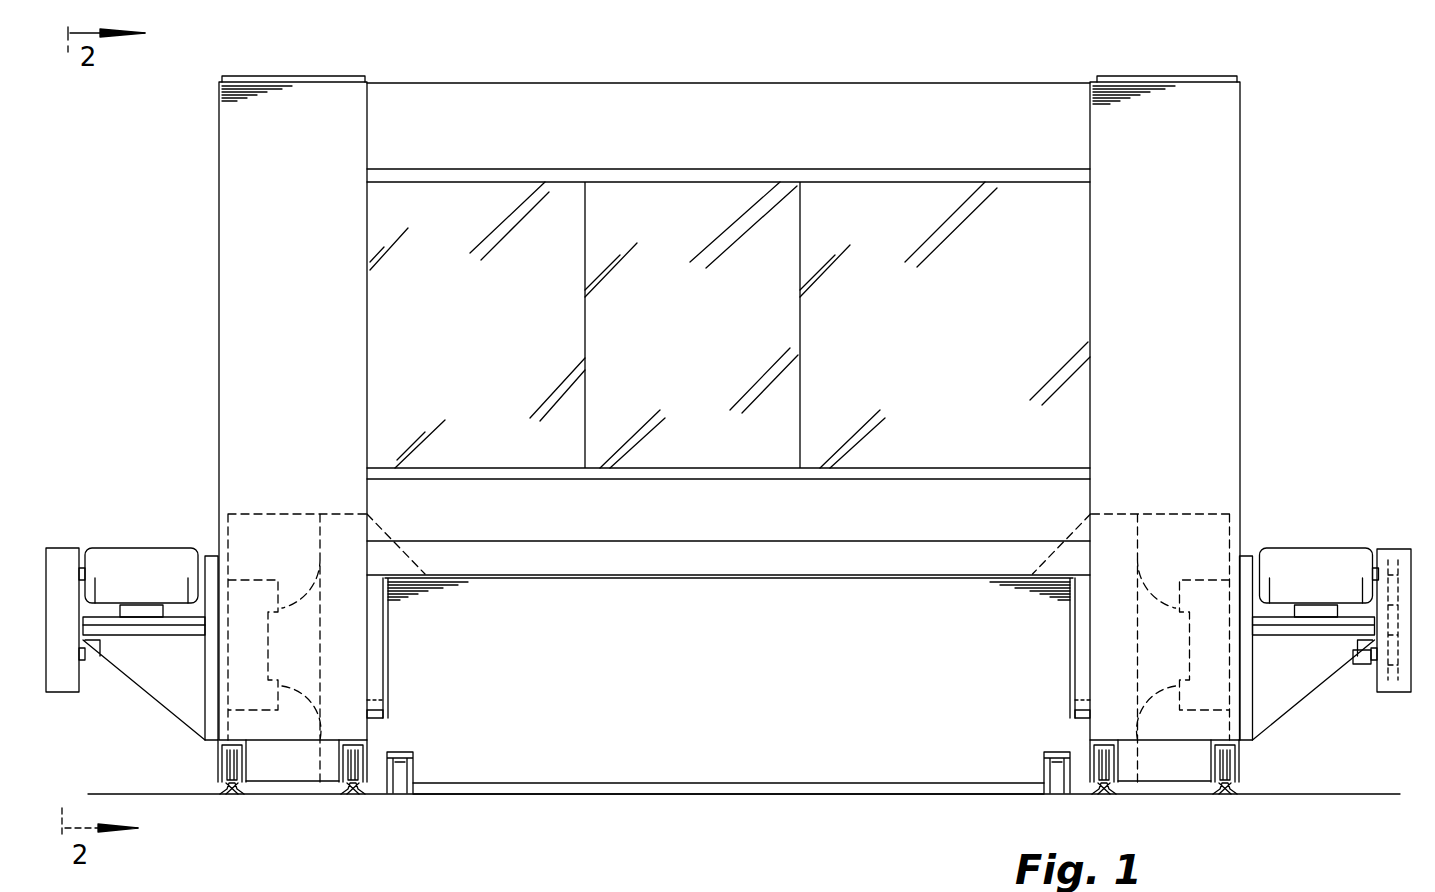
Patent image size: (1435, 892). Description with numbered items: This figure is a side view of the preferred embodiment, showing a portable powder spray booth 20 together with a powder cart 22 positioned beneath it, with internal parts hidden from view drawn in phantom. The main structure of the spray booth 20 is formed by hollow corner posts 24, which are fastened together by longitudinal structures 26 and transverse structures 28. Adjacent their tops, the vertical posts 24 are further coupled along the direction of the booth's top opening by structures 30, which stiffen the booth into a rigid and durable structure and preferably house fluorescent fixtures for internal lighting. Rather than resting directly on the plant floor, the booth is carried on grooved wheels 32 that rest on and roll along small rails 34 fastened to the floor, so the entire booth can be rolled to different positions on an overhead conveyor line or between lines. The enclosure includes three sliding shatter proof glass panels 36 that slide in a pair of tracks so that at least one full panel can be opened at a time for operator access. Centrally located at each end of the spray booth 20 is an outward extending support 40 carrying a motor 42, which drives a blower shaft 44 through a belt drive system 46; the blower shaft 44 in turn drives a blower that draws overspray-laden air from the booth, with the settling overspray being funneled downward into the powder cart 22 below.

The spray booth 20 is at (1252, 282).
The powder cart 22 is at (722, 782).
The hollow corner posts 24 is at (237, 110).
The longitudinal structures 26 is at (773, 527).
The transverse structures 28 is at (341, 512).
The structures 30 is at (750, 100).
The grooved wheels 32 is at (232, 762).
The rails 34 is at (226, 791).
The sliding shatter proof glass panels 36 is at (500, 192).
The outward extending support 40 is at (163, 685).
The motor 42 is at (151, 548).
The blower shaft 44 is at (1376, 668).
The belt drive system 46 is at (1392, 548).